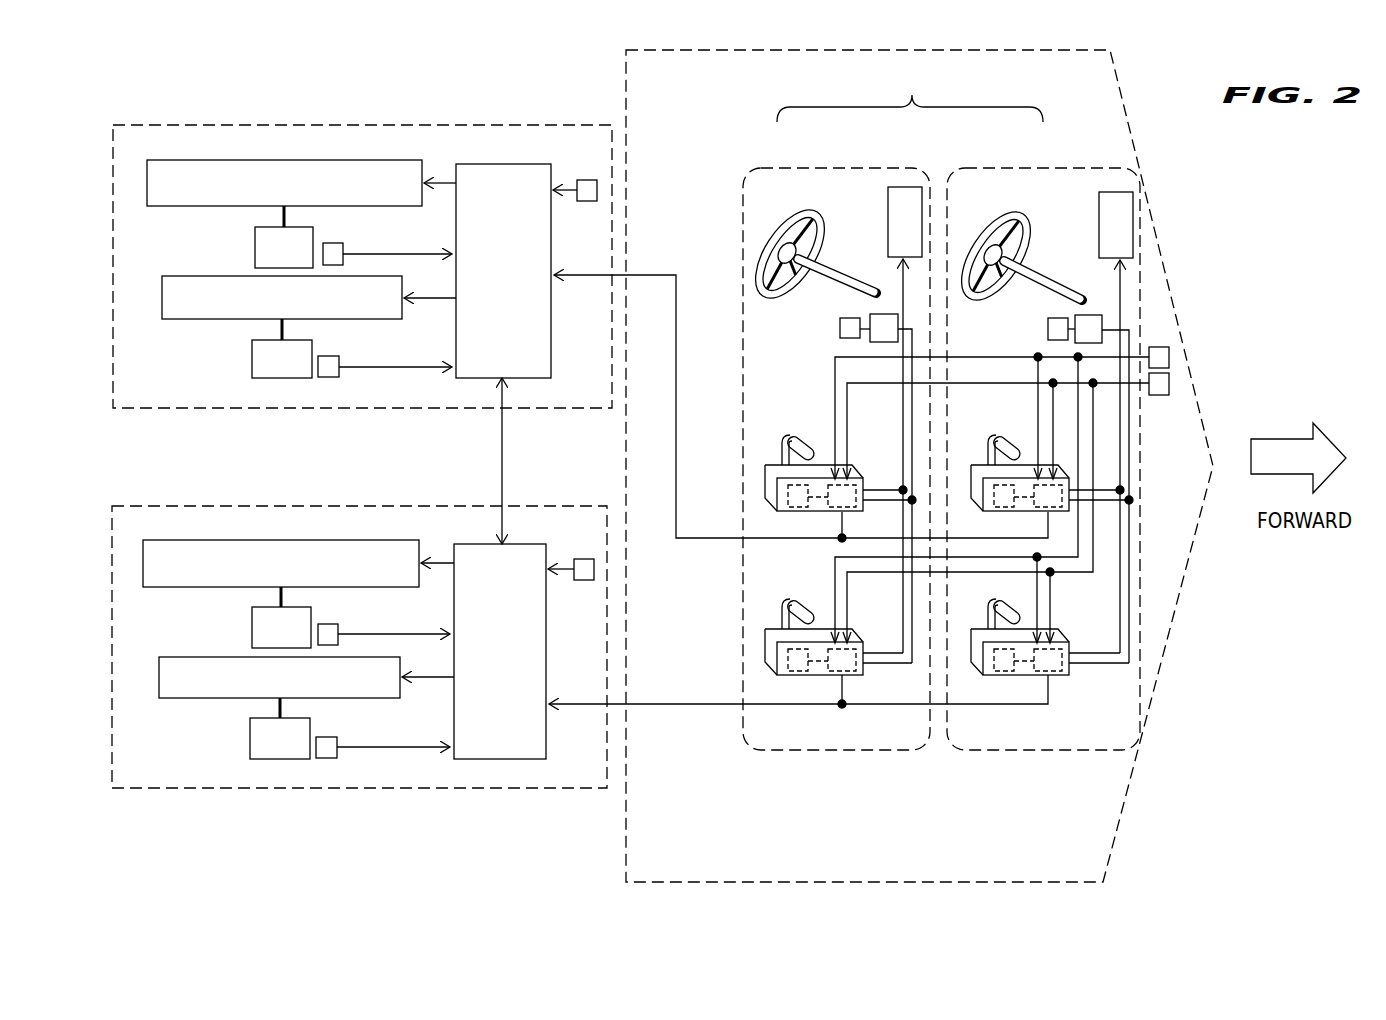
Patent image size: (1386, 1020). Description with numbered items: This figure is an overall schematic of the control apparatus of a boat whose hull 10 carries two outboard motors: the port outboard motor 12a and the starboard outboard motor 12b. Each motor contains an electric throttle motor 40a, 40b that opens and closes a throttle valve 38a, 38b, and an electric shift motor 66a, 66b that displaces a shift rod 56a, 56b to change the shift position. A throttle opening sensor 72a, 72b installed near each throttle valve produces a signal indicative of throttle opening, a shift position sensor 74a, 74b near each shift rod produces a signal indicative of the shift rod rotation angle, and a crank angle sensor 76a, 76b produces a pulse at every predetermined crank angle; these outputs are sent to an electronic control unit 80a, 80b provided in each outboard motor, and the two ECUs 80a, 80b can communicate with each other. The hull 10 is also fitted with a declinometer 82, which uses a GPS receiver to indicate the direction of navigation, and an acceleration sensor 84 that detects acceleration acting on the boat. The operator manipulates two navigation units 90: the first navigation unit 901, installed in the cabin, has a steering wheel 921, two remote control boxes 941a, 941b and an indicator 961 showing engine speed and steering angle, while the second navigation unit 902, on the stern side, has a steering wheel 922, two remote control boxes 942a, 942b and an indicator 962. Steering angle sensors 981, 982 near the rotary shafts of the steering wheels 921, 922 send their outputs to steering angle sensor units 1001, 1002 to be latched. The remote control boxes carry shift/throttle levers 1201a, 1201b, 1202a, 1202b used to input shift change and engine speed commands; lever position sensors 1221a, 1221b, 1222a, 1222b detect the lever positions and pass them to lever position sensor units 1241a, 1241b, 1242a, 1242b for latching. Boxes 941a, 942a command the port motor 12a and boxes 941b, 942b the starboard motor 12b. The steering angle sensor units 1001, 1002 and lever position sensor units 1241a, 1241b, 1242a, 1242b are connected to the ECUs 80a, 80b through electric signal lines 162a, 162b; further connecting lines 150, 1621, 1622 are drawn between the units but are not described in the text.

The hull 10 is at (1135, 140).
The port outboard motor 12a is at (314, 124).
The starboard outboard motor 12b is at (327, 506).
The throttle valve 38a is at (284, 237).
The throttle valve 38b is at (281, 617).
The throttle motor 40a is at (174, 207).
The throttle motor 40b is at (175, 588).
The shift rod 56a is at (282, 348).
The shift rod 56b is at (280, 728).
The shift motor 66a is at (191, 320).
The shift motor 66b is at (194, 700).
The throttle opening sensor 72a is at (343, 244).
The throttle opening sensor 72b is at (338, 626).
The shift position sensor 74a is at (339, 358).
The shift position sensor 74b is at (337, 738).
The crank angle sensor 76a is at (586, 180).
The crank angle sensor 76b is at (584, 559).
The electronic control unit 80a is at (477, 354).
The electronic control unit 80b is at (474, 651).
The declinometer 82 is at (1170, 348).
The acceleration sensor 84 is at (1170, 381).
The navigation units 90 is at (910, 96).
The hub communication line 150 is at (902, 373).
The electric signal line 162a is at (676, 273).
The electric signal line 162b is at (701, 711).
The first navigation unit 901 is at (1000, 164).
The second navigation unit 902 is at (803, 164).
The steering wheel 921 is at (1027, 221).
The steering wheel 922 is at (818, 226).
The remote control box 941a is at (980, 462).
The remote control box 941b is at (967, 653).
The remote control box 942a is at (762, 471).
The remote control box 942b is at (762, 650).
The indicator 961 is at (1110, 192).
The indicator 962 is at (904, 187).
The steering angle sensor 981 is at (1053, 318).
The steering angle sensor 982 is at (838, 328).
The steering angle sensor unit 1001 is at (1093, 313).
The steering angle sensor unit 1002 is at (893, 313).
The shift/throttle lever 1201a is at (1008, 432).
The shift/throttle lever 1201b is at (1013, 605).
The shift/throttle lever 1202a is at (805, 416).
The shift/throttle lever 1202b is at (790, 598).
The lever position sensor 1221a is at (988, 496).
The lever position sensor 1221b is at (978, 670).
The lever position sensor 1222a is at (790, 491).
The lever position sensor 1222b is at (772, 667).
The lever position sensor unit 1241a is at (1082, 513).
The lever position sensor unit 1241b is at (1067, 679).
The lever position sensor unit 1242a is at (833, 511).
The lever position sensor unit 1242b is at (830, 678).
The station communication line 1621 is at (1131, 479).
The station communication line 1622 is at (914, 346).